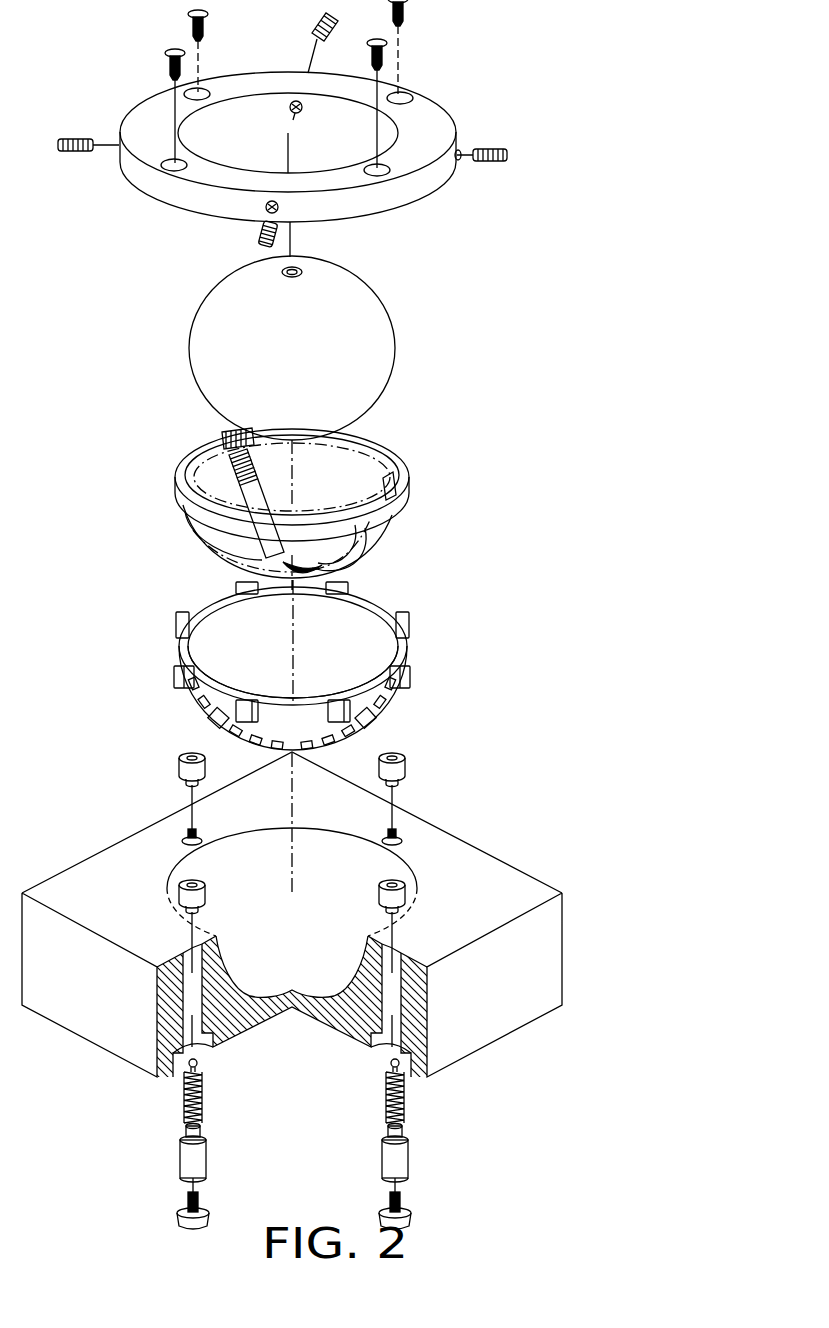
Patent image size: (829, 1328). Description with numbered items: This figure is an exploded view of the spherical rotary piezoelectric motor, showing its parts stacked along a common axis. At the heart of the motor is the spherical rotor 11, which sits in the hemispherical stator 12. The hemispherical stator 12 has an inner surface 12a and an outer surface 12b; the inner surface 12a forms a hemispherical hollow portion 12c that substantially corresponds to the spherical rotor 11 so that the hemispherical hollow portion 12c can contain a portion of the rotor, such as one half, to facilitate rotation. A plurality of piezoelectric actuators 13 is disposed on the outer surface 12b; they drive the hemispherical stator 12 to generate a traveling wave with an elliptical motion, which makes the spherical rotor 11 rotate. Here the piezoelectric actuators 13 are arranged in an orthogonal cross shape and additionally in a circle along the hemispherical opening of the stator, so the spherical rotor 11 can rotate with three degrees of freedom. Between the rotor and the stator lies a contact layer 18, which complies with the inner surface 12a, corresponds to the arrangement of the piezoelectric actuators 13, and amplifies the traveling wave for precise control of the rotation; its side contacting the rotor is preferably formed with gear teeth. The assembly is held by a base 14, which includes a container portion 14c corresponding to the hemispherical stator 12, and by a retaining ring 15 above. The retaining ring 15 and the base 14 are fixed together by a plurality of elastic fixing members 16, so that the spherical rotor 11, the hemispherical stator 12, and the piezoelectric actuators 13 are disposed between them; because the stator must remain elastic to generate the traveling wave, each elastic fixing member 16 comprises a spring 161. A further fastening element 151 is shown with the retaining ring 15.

The spherical rotor 11 is at (373, 342).
The hemispherical stator 12 is at (302, 652).
The inner surface 12a is at (210, 622).
The outer surface 12b is at (198, 702).
The hemispherical hollow portion 12c is at (363, 659).
The piezoelectric actuators 13 is at (408, 680).
The base 14 is at (542, 965).
The container portion 14c is at (367, 877).
The retaining ring 15 is at (428, 110).
The set screws 151 is at (490, 149).
The elastic fixing members 16 is at (296, 1144).
The spring 161 is at (402, 1107).
The contact layer 18 is at (380, 453).